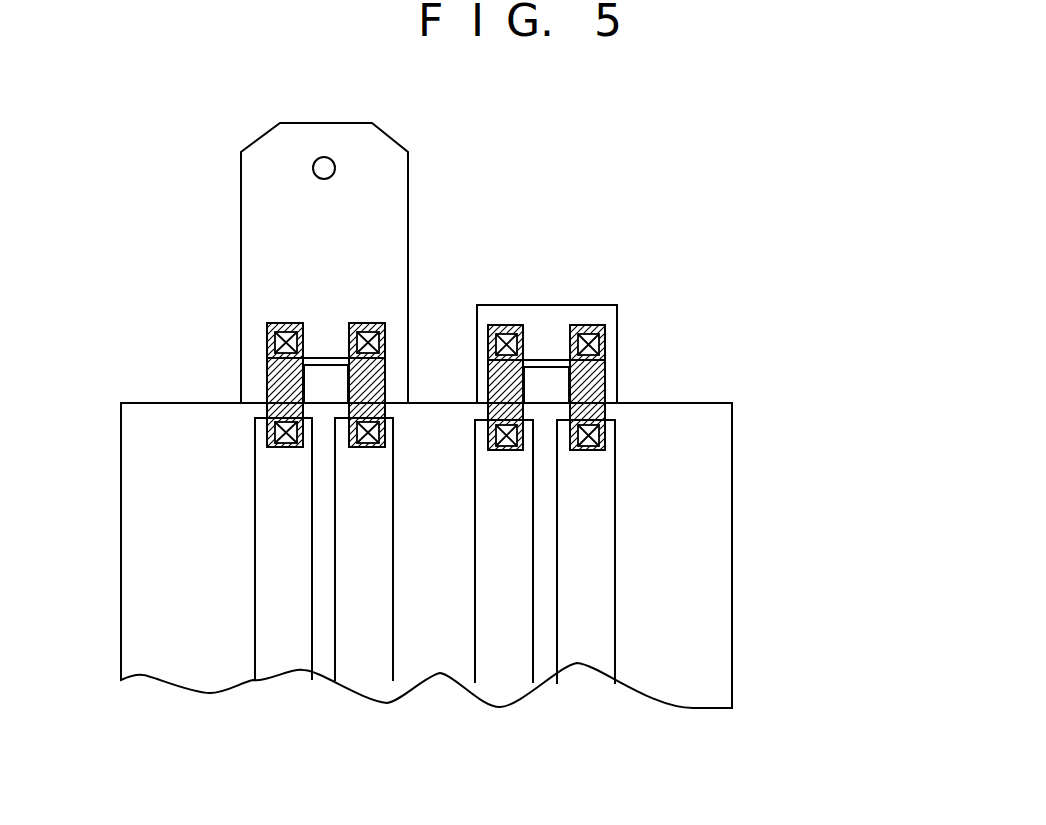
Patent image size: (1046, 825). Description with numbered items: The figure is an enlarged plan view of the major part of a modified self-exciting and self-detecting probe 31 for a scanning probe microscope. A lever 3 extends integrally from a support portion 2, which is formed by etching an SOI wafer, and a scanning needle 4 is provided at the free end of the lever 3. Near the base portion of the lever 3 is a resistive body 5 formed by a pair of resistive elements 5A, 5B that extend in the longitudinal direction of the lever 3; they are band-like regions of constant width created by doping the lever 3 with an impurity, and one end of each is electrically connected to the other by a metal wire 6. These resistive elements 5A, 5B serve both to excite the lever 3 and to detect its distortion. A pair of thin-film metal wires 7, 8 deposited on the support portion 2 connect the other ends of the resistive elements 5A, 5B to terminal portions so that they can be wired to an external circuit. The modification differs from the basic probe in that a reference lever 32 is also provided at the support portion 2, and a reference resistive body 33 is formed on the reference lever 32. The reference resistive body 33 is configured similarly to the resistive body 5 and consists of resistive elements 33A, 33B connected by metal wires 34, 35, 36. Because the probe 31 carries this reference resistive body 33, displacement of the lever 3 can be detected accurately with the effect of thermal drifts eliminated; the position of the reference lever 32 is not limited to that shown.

The support portion 2 is at (712, 484).
The lever 3 is at (241, 208).
The scanning needle 4 is at (325, 168).
The resistive body 5 is at (235, 355).
The resistive element 5A is at (270, 387).
The resistive element 5B is at (270, 370).
The metal wire 6 is at (325, 335).
The metal wire 7 is at (280, 655).
The metal wire 8 is at (360, 663).
The probe 31 is at (699, 263).
The reference lever 32 is at (500, 303).
The reference resistive body 33 is at (643, 338).
The resistive element 33A is at (585, 372).
The resistive element 33B is at (600, 385).
The metal wire 34 is at (552, 340).
The metal wire 35 is at (513, 663).
The metal wire 36 is at (597, 653).